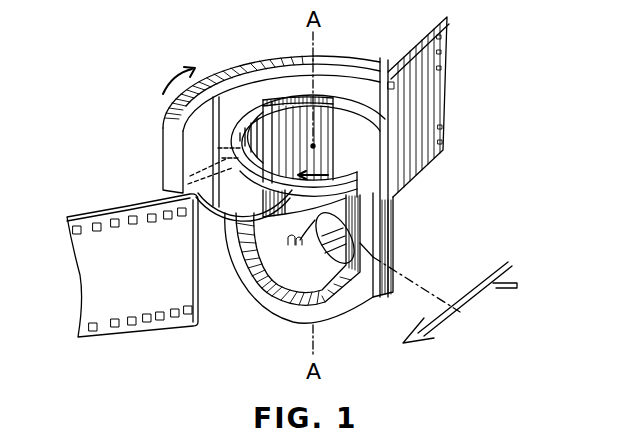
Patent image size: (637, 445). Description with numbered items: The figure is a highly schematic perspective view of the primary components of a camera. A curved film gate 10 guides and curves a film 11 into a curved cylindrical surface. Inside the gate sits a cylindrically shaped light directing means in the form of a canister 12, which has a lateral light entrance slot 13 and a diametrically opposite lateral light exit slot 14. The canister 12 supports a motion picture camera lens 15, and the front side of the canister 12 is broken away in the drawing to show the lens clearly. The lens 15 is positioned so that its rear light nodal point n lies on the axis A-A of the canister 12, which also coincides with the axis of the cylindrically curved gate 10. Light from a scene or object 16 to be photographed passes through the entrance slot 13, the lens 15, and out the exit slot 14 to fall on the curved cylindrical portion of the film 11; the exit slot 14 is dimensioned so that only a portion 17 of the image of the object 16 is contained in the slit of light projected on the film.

The curved film gate 10 is at (336, 66).
The film 11 is at (424, 46).
The canister 12 is at (288, 102).
The light entrance slot 13 is at (367, 177).
The light exit slot 14 is at (270, 127).
The motion picture camera lens 15 is at (332, 250).
The object 16 is at (477, 300).
The portion of the image 17 is at (232, 162).